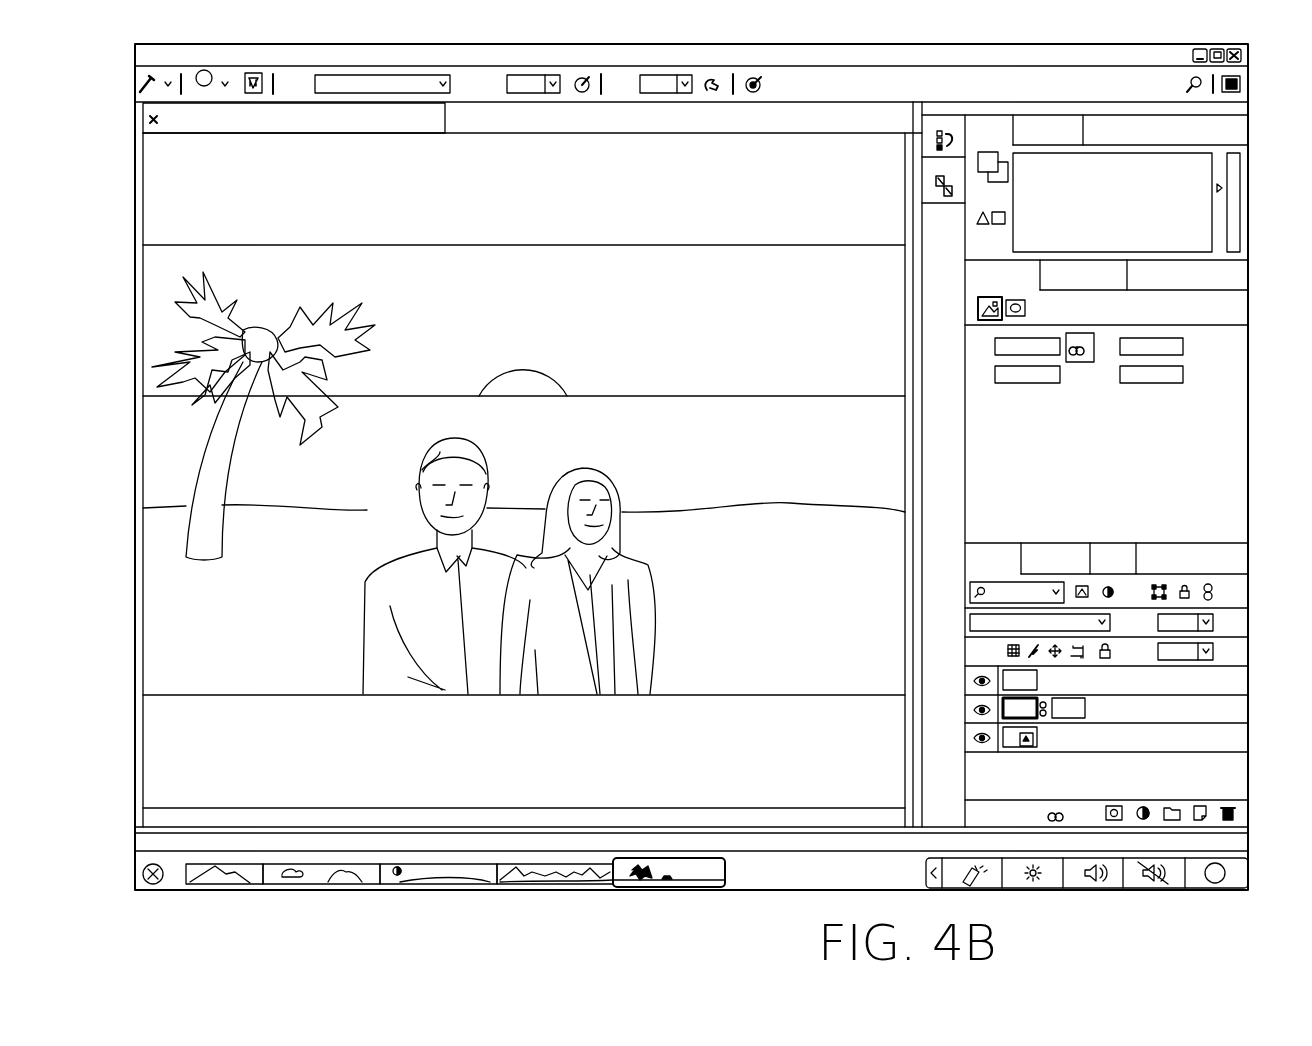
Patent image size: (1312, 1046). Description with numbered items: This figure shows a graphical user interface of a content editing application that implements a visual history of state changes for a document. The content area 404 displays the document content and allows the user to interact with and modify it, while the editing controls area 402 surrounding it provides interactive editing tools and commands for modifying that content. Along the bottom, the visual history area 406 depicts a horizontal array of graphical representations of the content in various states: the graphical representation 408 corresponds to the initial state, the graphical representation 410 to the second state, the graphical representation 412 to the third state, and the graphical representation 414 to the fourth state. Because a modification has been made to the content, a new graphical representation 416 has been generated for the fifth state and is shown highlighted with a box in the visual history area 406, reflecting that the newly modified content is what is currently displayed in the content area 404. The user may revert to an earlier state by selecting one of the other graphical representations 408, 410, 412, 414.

The editing controls area 402 is at (1242, 452).
The content area 404 is at (160, 425).
The visual history area 406 is at (659, 879).
The graphical representation 408 is at (212, 884).
The graphical representation 410 is at (318, 884).
The graphical representation 412 is at (435, 884).
The graphical representation 414 is at (553, 884).
The graphical representation 416 is at (667, 888).